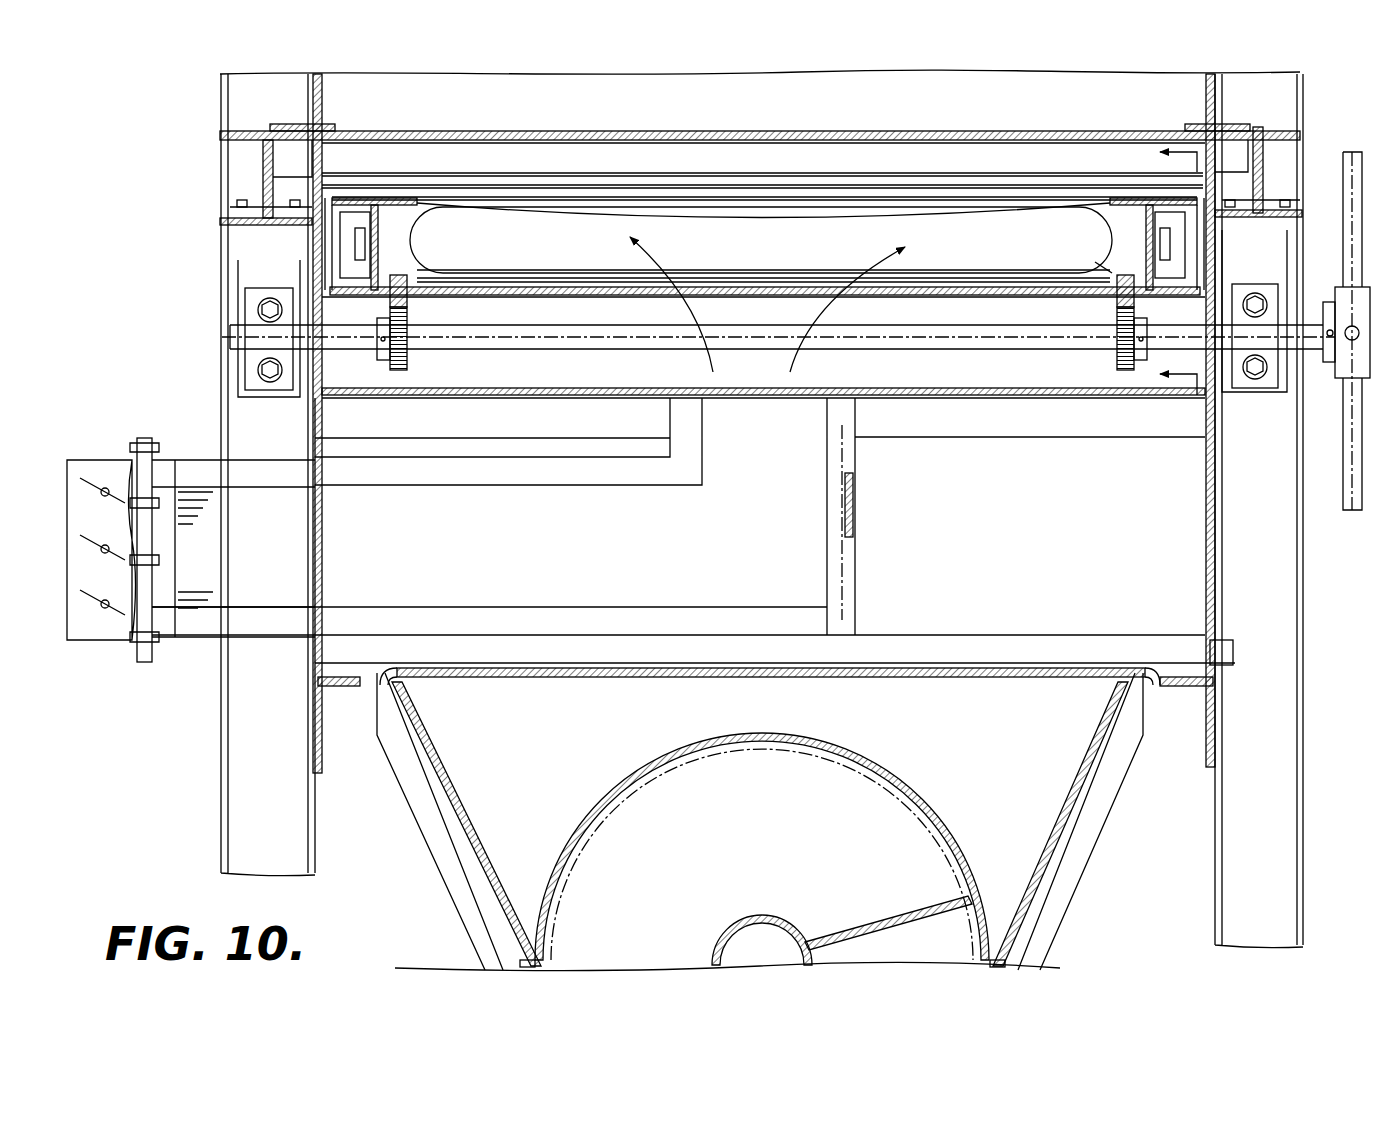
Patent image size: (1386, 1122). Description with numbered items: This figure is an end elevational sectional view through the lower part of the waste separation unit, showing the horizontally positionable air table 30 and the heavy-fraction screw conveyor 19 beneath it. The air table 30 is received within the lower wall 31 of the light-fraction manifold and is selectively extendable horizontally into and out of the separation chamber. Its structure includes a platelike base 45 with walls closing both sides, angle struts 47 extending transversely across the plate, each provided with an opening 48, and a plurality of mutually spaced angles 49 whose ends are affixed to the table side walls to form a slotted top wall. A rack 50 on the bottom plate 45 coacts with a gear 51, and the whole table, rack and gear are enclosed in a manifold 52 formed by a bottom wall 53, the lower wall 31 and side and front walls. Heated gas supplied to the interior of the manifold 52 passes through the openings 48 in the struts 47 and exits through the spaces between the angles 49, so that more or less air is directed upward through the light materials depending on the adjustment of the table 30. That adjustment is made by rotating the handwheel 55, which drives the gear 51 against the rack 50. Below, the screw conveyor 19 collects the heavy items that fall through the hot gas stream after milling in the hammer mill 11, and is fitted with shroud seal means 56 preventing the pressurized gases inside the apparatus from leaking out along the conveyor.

The hammer mill 11 is at (1158, 265).
The screw conveyor 19 is at (770, 848).
The air table 30 is at (597, 185).
The lower wall of manifold 31 is at (800, 130).
The platelike base 45 is at (1012, 297).
The angle struts 47 is at (1105, 276).
The opening 48 is at (515, 277).
The angles 49 is at (861, 206).
The rack 50 is at (410, 293).
The gear 51 is at (400, 370).
The manifold 52 is at (998, 395).
The bottom wall 53 is at (770, 393).
The handwheel 55 is at (1354, 508).
The shroud seal means 56 is at (650, 760).